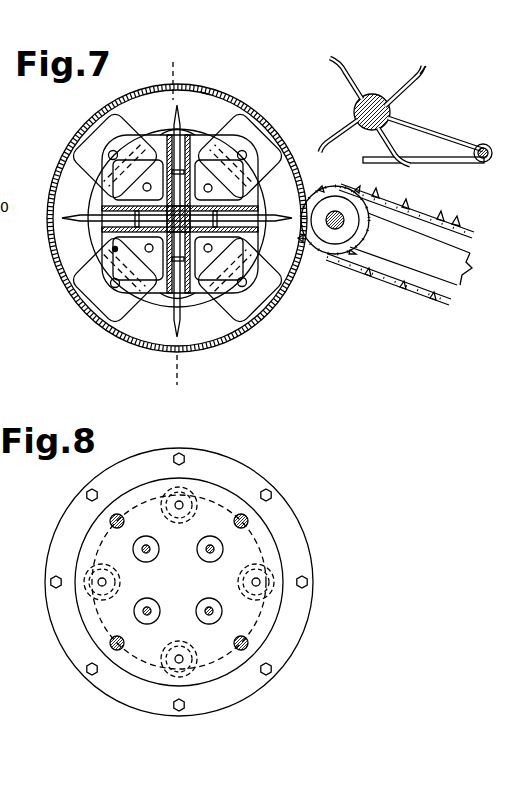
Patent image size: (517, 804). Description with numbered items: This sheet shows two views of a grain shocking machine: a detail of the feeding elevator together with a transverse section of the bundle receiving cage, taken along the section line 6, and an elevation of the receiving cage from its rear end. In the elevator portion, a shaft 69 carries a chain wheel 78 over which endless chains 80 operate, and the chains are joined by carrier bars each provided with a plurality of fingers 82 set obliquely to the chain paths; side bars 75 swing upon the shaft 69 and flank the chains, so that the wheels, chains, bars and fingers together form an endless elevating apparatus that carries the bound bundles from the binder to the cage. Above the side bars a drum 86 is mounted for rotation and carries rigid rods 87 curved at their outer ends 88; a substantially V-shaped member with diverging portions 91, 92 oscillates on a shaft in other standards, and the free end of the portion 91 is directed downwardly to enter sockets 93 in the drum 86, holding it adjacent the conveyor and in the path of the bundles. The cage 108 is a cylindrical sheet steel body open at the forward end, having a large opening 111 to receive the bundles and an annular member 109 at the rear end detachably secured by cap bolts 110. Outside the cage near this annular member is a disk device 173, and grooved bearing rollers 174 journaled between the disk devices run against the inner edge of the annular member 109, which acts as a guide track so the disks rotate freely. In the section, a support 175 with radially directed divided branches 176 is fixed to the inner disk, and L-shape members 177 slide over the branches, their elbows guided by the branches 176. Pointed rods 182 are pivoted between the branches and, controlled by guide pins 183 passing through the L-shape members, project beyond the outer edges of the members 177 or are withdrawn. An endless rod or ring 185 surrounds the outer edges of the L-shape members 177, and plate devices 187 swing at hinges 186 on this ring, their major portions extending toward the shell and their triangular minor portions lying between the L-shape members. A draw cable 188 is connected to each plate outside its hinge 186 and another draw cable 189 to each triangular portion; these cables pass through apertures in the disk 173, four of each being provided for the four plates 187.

In FIG. 7, the section line 6- 6 is at (175, 222).
In FIG. 7, the shaft 69 is at (335, 229).
In FIG. 7, the side bar 75 is at (466, 263).
In FIG. 7, the chain wheel 78 is at (353, 226).
In FIG. 7, the endless chain 80 is at (423, 213).
In FIG. 7, the finger 82 is at (454, 220).
In FIG. 7, the drum 86 is at (357, 109).
In FIG. 7, the finger or rod 87 is at (407, 85).
In FIG. 7, the curved outer end 88 is at (423, 72).
In FIG. 7, the diverging portion 91 is at (448, 120).
In FIG. 7, the diverging portion 92 is at (425, 158).
In FIG. 7, the socket 93 is at (367, 95).
In FIG. 7, the cage 108 is at (204, 93).
In FIG. 8, the cage 108 is at (252, 470).
In FIG. 7, the annular member 109 is at (150, 113).
In FIG. 8, the annular member 109 is at (230, 478).
In FIG. 8, the cap bolt 110 is at (270, 494).
In FIG. 7, the opening 111 is at (285, 143).
In FIG. 8, the disk device 173 is at (263, 542).
In FIG. 7, the grooved bearing roller 174 is at (185, 132).
In FIG. 8, the grooved bearing roller 174 is at (194, 512).
In FIG. 7, the support 175 is at (170, 262).
In FIG. 7, the divided branch 176 is at (115, 249).
In FIG. 7, the L-shape member 177 is at (172, 268).
In FIG. 7, the pointed pin or rod 182 is at (180, 110).
In FIG. 7, the guide pin 183 is at (172, 298).
In FIG. 7, the endless rod or ring 185 is at (103, 197).
In FIG. 7, the hinge 186 is at (118, 170).
In FIG. 7, the plate device 187 is at (90, 163).
In FIG. 7, the draw cable 188 is at (113, 155).
In FIG. 8, the draw cable 188 is at (124, 521).
In FIG. 7, the draw cable 189 is at (178, 220).
In FIG. 8, the draw cable 189 is at (150, 550).